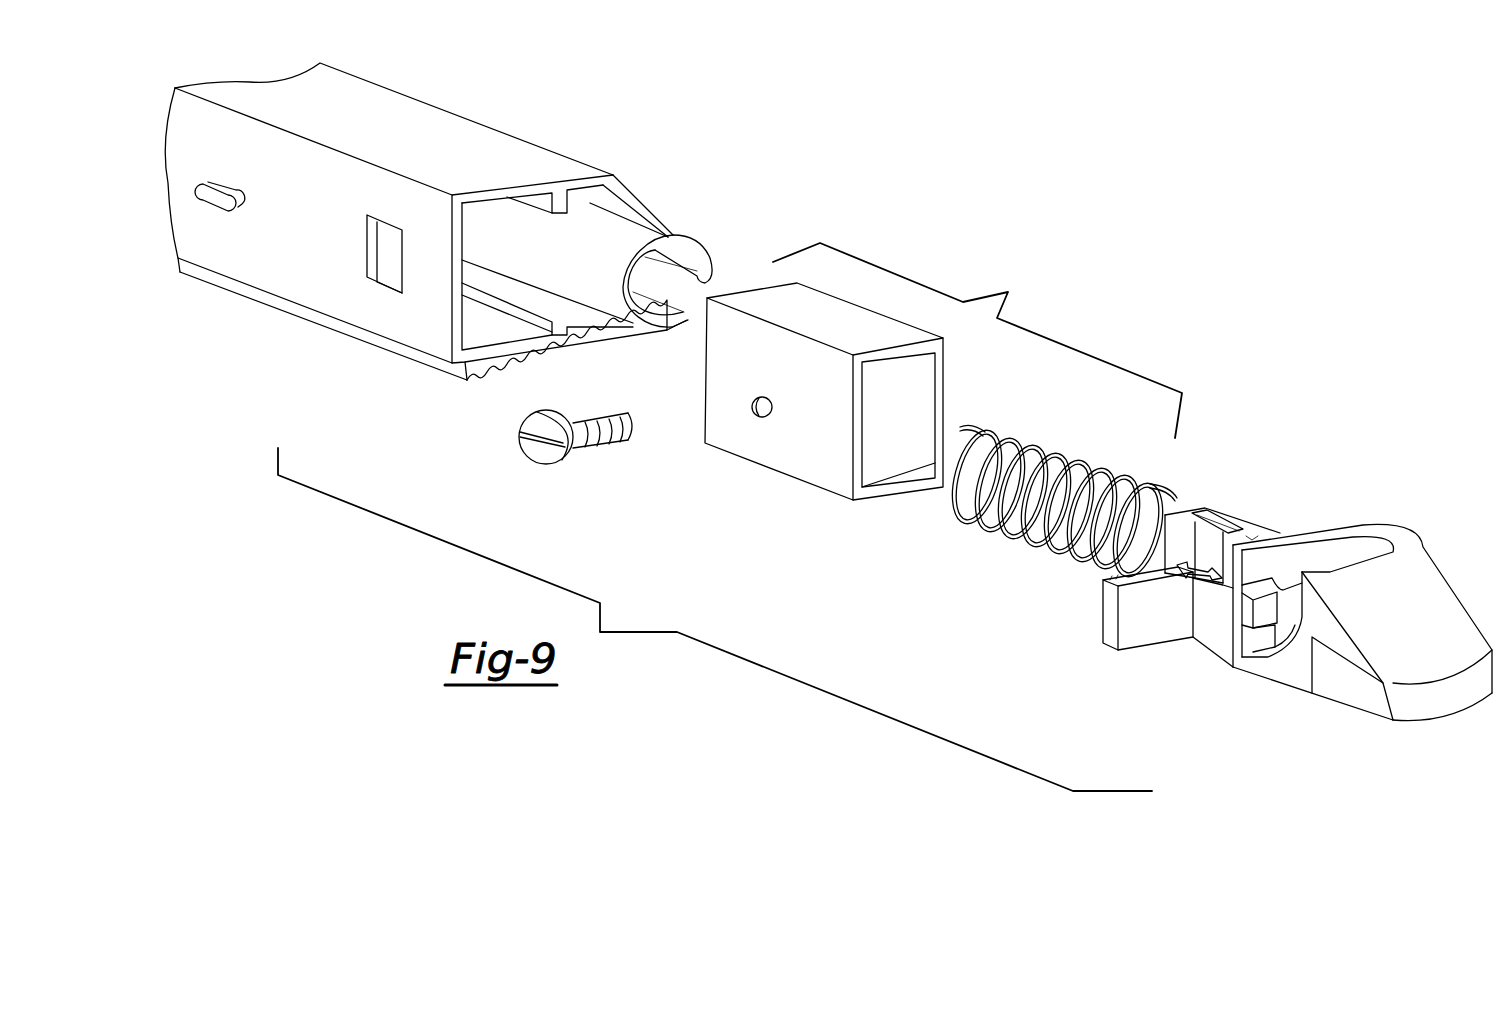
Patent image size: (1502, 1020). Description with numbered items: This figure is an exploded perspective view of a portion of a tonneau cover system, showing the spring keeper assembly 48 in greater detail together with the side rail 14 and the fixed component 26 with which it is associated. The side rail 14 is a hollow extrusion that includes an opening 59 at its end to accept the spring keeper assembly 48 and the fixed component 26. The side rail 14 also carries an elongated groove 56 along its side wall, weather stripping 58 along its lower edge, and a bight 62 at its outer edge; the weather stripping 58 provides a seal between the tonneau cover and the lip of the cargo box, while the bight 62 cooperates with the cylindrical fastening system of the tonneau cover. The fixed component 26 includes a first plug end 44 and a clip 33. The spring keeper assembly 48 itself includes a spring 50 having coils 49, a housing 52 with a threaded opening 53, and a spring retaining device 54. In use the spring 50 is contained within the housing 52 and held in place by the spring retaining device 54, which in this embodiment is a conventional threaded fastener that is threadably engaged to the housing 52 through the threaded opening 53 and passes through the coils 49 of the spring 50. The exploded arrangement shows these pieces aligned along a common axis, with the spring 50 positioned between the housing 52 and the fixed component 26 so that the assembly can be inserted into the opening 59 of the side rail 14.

The side rail 14 is at (468, 231).
The fixed component 26 is at (1328, 593).
The clip 33 is at (1105, 618).
The first plug end 44 is at (1233, 517).
The spring keeper assembly 48 is at (977, 340).
The coils 49 is at (1044, 538).
The spring 50 is at (1032, 538).
The housing 52 is at (797, 400).
The threaded opening 53 is at (745, 411).
The spring retaining device 54 is at (538, 452).
The elongated groove 56 is at (225, 212).
The weather stripping 58 is at (362, 342).
The opening 59 is at (595, 283).
The bight 62 is at (678, 263).